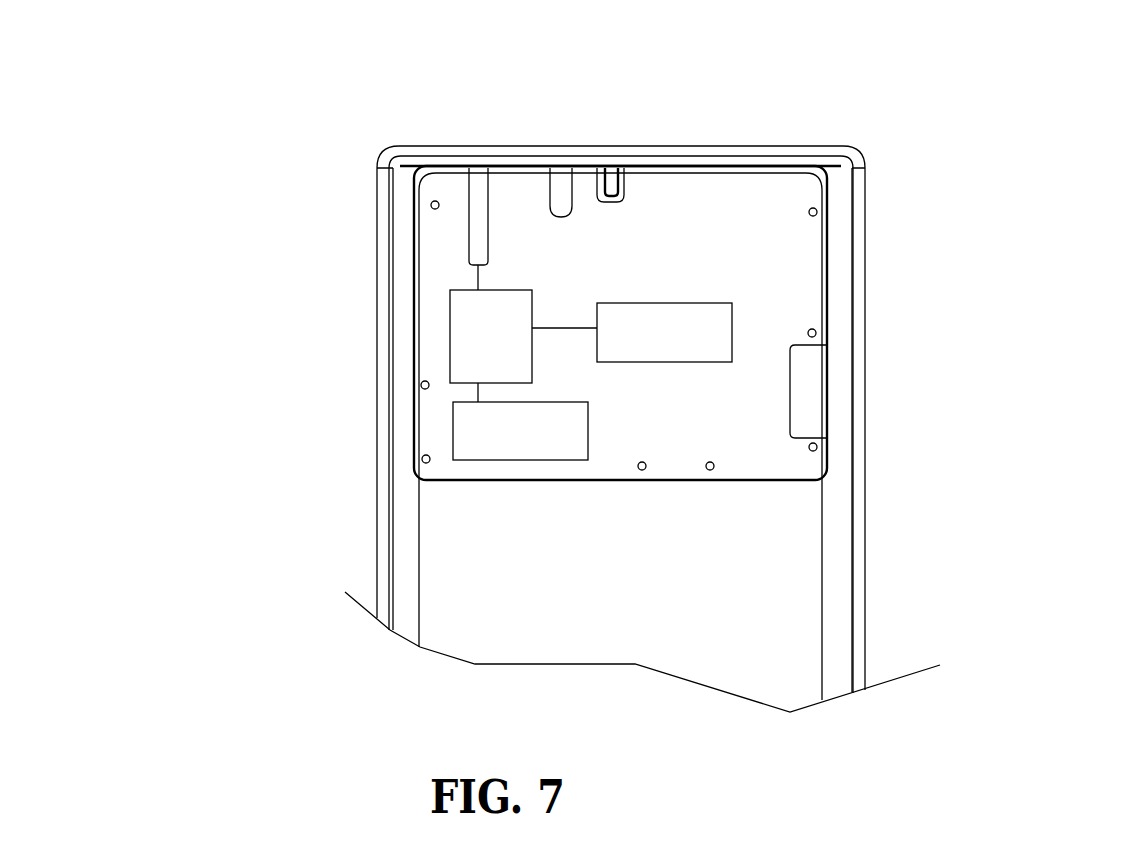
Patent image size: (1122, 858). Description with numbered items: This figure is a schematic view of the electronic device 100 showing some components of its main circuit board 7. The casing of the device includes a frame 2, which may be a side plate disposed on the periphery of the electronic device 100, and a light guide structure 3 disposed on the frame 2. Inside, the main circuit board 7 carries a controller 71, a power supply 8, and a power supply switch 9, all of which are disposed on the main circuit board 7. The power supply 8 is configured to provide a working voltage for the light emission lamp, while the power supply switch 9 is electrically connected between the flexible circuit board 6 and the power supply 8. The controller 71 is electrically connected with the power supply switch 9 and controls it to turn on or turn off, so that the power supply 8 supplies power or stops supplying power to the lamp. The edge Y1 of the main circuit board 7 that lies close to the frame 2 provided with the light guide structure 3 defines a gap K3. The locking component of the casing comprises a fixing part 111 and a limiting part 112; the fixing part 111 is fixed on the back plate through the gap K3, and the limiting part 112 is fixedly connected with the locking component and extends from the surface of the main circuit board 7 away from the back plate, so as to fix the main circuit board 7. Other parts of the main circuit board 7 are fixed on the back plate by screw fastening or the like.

The electronic device 100 is at (217, 190).
The frame 2 is at (412, 146).
The light guide structure 3 is at (593, 148).
The flexible circuit board 6 is at (468, 237).
The edge of the main circuit board Y1 is at (505, 170).
The main circuit board 7 is at (728, 192).
The controller 71 is at (678, 303).
The power supply 8 is at (588, 433).
The power supply switch 9 is at (515, 290).
The fixing part 111 is at (618, 178).
The limiting part 112 is at (556, 188).
The gap K3 is at (630, 197).